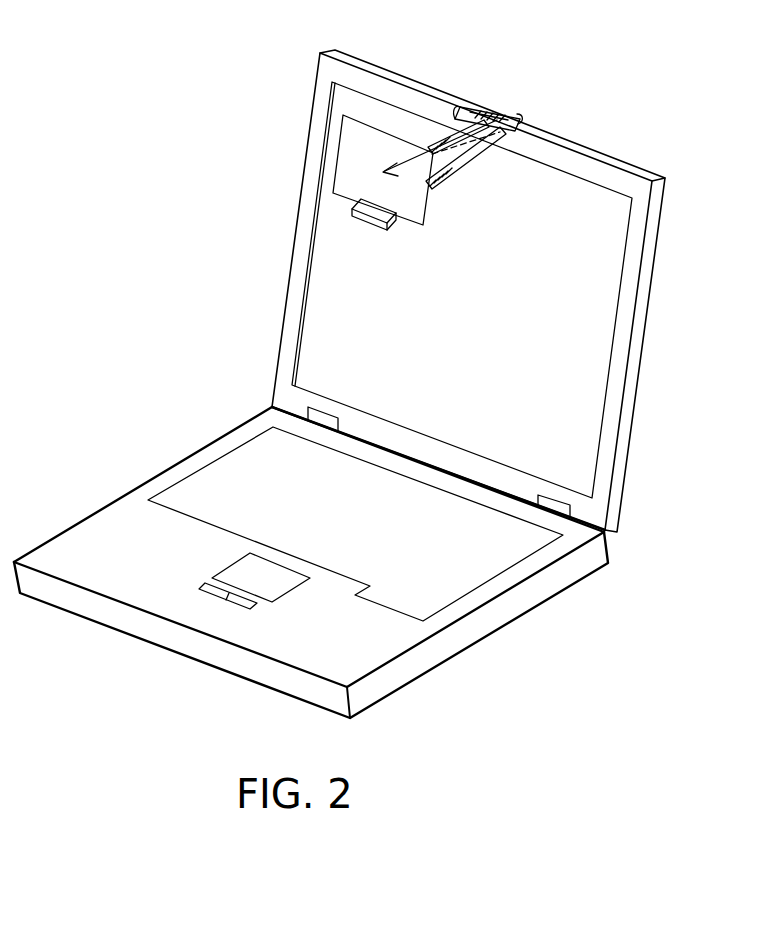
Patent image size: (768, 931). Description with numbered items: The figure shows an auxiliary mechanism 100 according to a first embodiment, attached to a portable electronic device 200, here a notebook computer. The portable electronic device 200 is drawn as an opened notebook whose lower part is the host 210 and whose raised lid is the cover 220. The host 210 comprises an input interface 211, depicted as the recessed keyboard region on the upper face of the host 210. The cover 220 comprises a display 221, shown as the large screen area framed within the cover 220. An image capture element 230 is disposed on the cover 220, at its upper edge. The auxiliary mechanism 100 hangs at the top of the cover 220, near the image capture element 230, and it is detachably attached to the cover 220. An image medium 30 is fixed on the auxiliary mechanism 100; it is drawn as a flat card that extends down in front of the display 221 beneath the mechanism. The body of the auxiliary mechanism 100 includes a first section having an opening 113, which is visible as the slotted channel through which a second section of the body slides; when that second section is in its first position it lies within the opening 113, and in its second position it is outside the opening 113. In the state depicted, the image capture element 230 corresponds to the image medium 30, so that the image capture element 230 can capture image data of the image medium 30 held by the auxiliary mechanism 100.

The portable electronic device 200 is at (387, 380).
The host 210 is at (317, 575).
The input interface 211 is at (418, 597).
The cover 220 is at (493, 274).
The display 221 is at (607, 235).
The image capture element 230 is at (466, 110).
The auxiliary mechanism 100 is at (502, 102).
The opening 113 is at (472, 157).
The image medium 30 is at (355, 157).